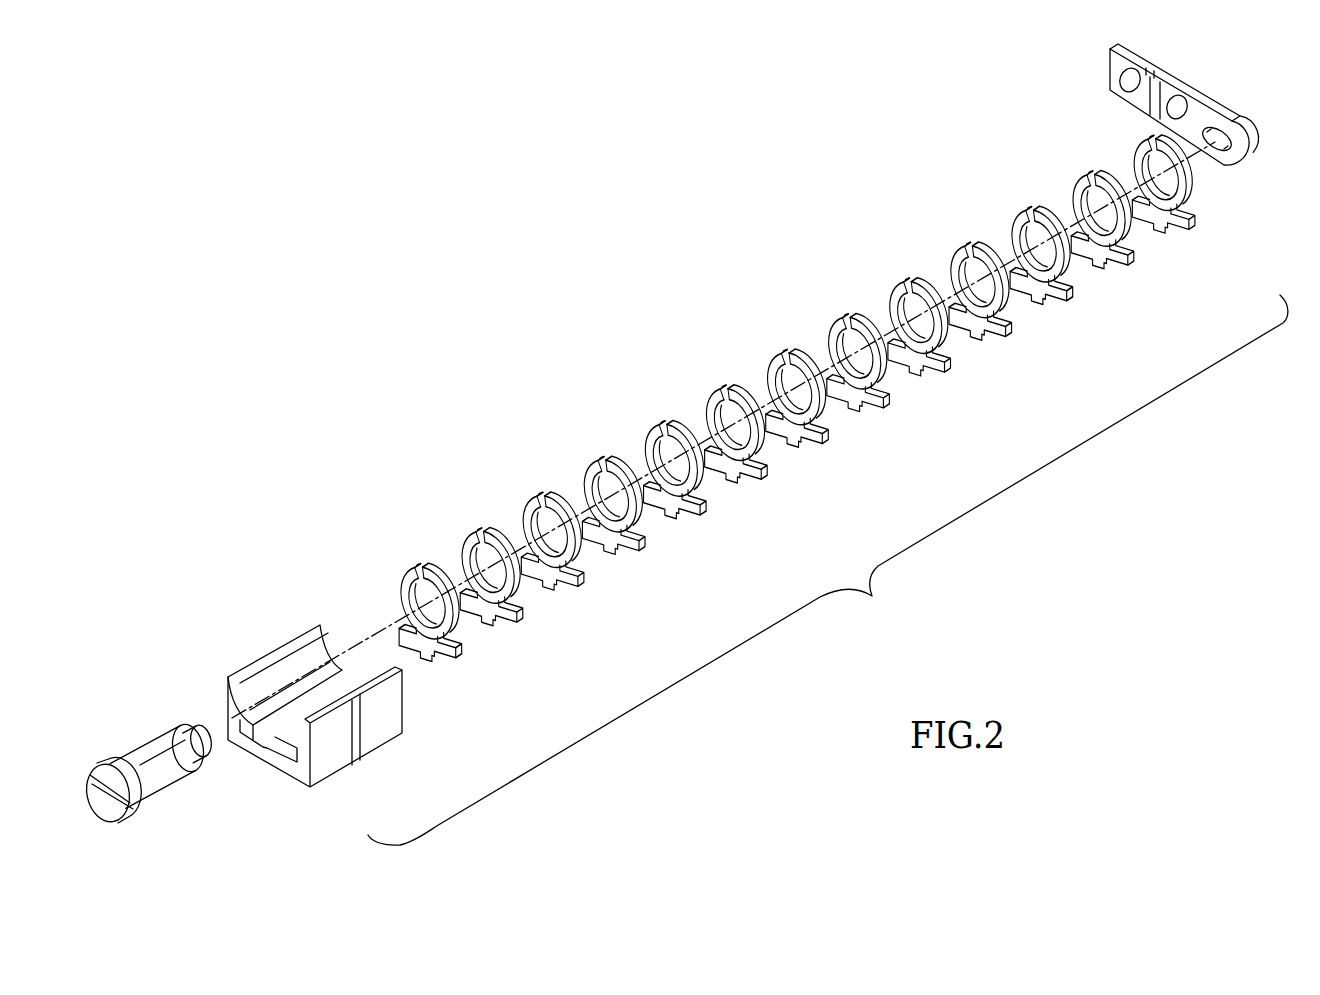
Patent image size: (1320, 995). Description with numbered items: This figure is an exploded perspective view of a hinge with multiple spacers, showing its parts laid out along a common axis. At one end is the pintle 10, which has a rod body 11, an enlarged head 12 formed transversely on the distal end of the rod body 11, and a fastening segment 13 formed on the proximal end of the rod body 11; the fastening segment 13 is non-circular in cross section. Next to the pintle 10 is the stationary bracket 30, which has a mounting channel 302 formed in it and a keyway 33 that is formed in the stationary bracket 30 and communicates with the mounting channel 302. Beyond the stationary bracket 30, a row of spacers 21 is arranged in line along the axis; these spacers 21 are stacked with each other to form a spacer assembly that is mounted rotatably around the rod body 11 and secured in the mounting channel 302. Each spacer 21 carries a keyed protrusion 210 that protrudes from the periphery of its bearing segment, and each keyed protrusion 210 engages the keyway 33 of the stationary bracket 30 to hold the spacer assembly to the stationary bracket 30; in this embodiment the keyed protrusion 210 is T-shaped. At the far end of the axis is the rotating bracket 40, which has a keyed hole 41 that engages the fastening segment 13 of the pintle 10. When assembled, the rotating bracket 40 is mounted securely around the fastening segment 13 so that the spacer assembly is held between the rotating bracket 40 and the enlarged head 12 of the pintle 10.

The pintle 10 is at (163, 754).
The rod body 11 is at (168, 738).
The enlarged head 12 is at (105, 773).
The fastening segment 13 is at (195, 733).
The spacer 21 is at (483, 588).
The keyed protrusion 210 is at (490, 625).
The stationary bracket 30 is at (305, 714).
The mounting channel 302 is at (277, 672).
The keyway 33 is at (272, 757).
The rotating bracket 40 is at (1207, 95).
The keyed hole 41 is at (1232, 156).